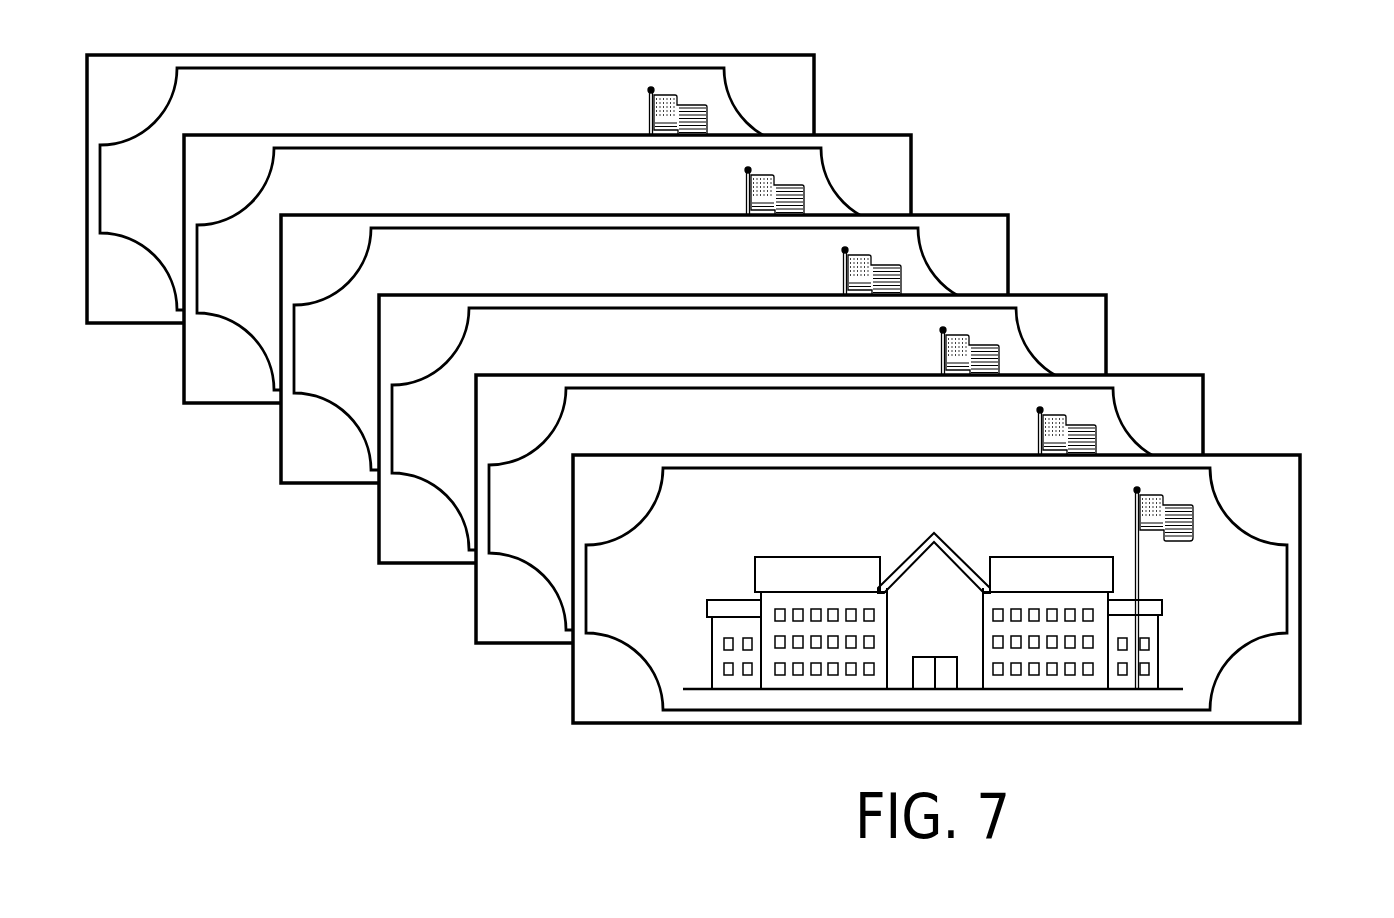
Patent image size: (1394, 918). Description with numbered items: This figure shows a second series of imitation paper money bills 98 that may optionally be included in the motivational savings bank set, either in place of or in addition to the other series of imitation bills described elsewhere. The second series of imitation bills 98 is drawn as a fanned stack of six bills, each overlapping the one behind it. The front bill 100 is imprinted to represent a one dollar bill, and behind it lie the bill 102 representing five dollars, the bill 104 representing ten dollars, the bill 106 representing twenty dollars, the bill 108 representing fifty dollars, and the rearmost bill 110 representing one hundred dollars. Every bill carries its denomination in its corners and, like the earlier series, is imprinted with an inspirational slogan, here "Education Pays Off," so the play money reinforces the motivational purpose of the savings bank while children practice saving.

The second series of imitation paper money bills 98 is at (1289, 224).
The imitation bill 100 is at (1267, 561).
The imitation bill 102 is at (1184, 378).
The imitation bill 104 is at (1088, 297).
The imitation bill 106 is at (990, 218).
The imitation bill 108 is at (890, 138).
The imitation bill 110 is at (793, 63).